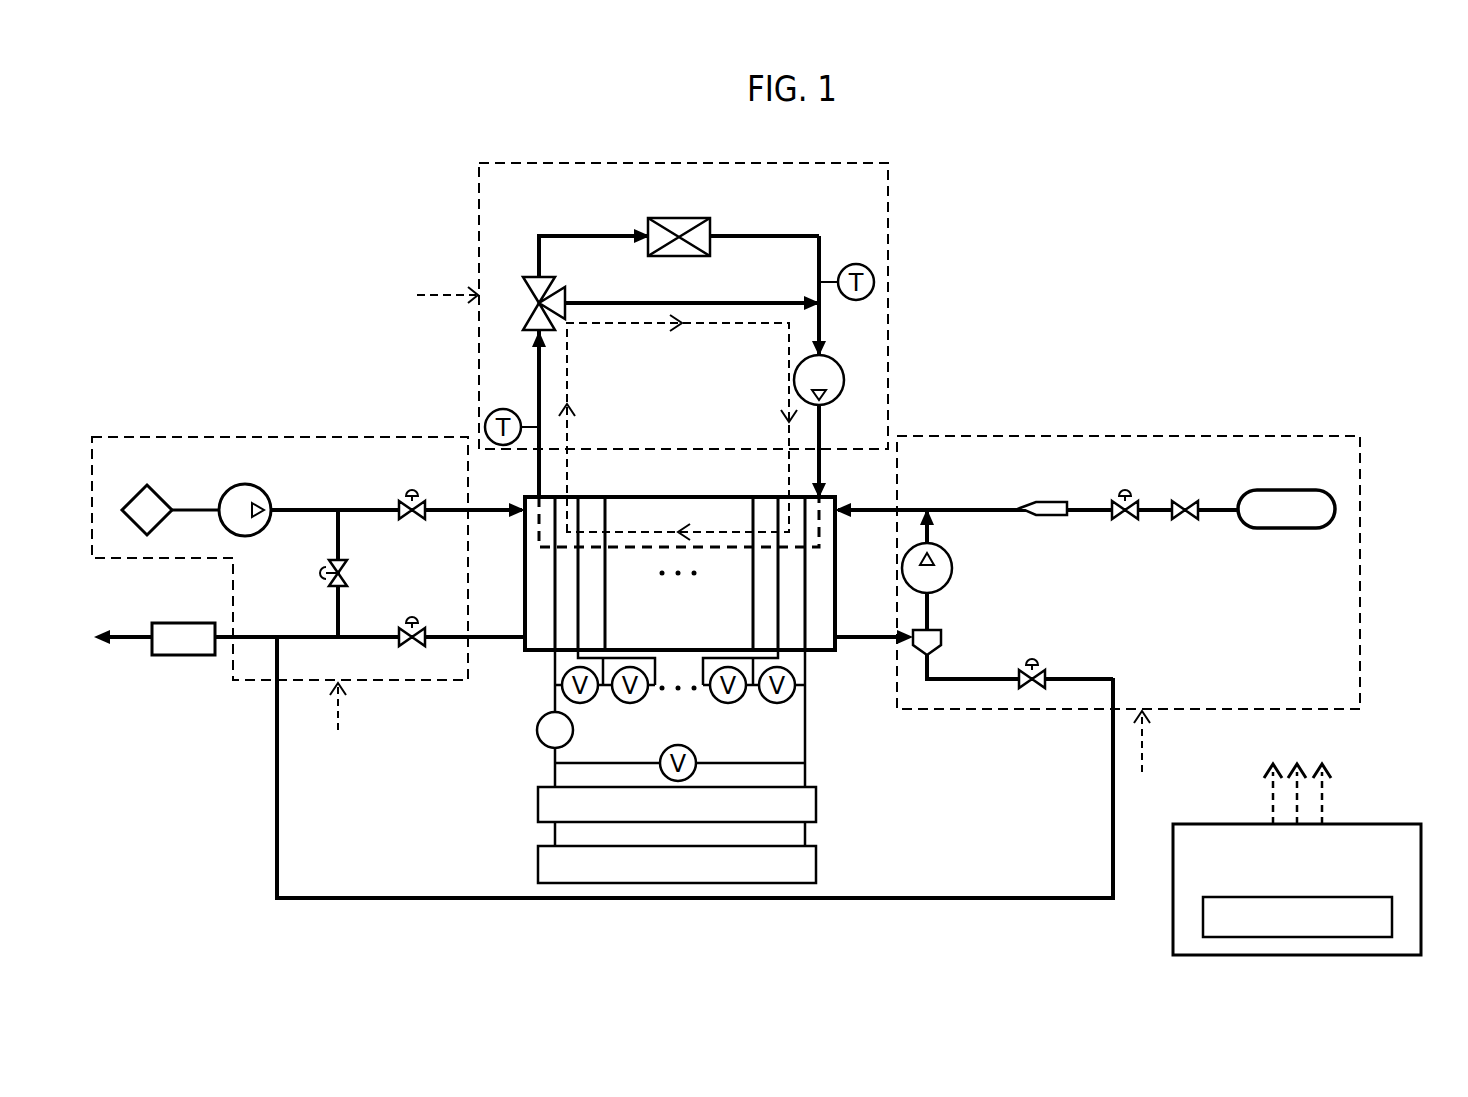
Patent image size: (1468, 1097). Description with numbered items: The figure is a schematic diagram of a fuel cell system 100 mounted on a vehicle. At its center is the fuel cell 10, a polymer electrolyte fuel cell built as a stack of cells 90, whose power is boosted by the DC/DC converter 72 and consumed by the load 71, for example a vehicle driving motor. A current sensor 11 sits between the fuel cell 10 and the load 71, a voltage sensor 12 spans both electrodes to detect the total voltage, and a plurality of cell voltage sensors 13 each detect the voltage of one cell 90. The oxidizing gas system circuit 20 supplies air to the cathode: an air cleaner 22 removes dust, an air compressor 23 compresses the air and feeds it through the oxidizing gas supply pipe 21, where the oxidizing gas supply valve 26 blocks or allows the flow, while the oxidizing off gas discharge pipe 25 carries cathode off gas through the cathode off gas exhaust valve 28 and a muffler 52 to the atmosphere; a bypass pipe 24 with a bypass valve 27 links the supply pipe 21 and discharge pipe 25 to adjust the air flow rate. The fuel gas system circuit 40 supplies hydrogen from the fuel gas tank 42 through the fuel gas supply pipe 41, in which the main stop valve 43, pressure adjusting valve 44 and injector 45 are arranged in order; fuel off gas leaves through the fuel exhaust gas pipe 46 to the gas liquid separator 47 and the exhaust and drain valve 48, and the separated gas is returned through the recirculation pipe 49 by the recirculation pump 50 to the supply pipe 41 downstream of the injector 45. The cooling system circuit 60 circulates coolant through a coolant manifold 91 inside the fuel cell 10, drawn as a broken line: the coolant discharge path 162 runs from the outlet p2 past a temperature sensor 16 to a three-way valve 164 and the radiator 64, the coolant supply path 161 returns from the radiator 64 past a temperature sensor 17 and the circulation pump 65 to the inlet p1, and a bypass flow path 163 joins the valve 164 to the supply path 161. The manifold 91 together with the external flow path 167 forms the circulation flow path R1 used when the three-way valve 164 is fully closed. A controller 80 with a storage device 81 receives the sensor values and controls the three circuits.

The fuel cell system 100 is at (1078, 188).
The fuel cell 10 is at (838, 501).
The current sensor 11 is at (538, 727).
The voltage sensor 12 is at (665, 752).
The cell voltage sensors 13 is at (777, 704).
The temperature sensor 16 is at (510, 409).
The temperature sensor 17 is at (858, 265).
The oxidizing gas system circuit 20 is at (112, 437).
The oxidizing gas supply pipe 21 is at (352, 510).
The air cleaner 22 is at (152, 491).
The air compressor 23 is at (247, 484).
The bypass pipe 24 is at (338, 549).
The oxidizing off gas discharge pipe 25 is at (355, 637).
The oxidizing gas supply valve 26 is at (412, 494).
The bypass valve 27 is at (320, 573).
The cathode off gas exhaust valve 28 is at (412, 622).
The fuel gas system circuit 40 is at (1276, 436).
The fuel gas supply pipe 41 is at (941, 508).
The fuel gas tank 42 is at (1275, 490).
The main stop valve 43 is at (1195, 500).
The pressure adjusting valve 44 is at (1125, 494).
The injector 45 is at (1048, 502).
The fuel exhaust gas pipe 46 is at (1068, 679).
The gas liquid separator 47 is at (945, 636).
The exhaust and drain valve 48 is at (1032, 665).
The recirculation pipe 49 is at (930, 608).
The recirculation pump 50 is at (953, 568).
The muffler 52 is at (183, 623).
The cooling system circuit 60 is at (805, 163).
The radiator 64 is at (682, 218).
The circulation pump 65 is at (833, 361).
The load 71 is at (818, 865).
The DC/DC converter 72 is at (818, 805).
The controller 80 is at (1362, 824).
The storage device 81 is at (1392, 917).
The cell 90 is at (785, 505).
The coolant manifold 91 is at (630, 547).
The coolant supply path 161 is at (821, 331).
The coolant discharge path 162 is at (537, 367).
The bypass flow path 163 is at (668, 303).
The three-way valve 164 is at (551, 285).
The external flow path 167 is at (836, 425).
The circulation flow path R1 is at (570, 378).
The inlet p1 is at (823, 493).
The outlet p2 is at (535, 493).